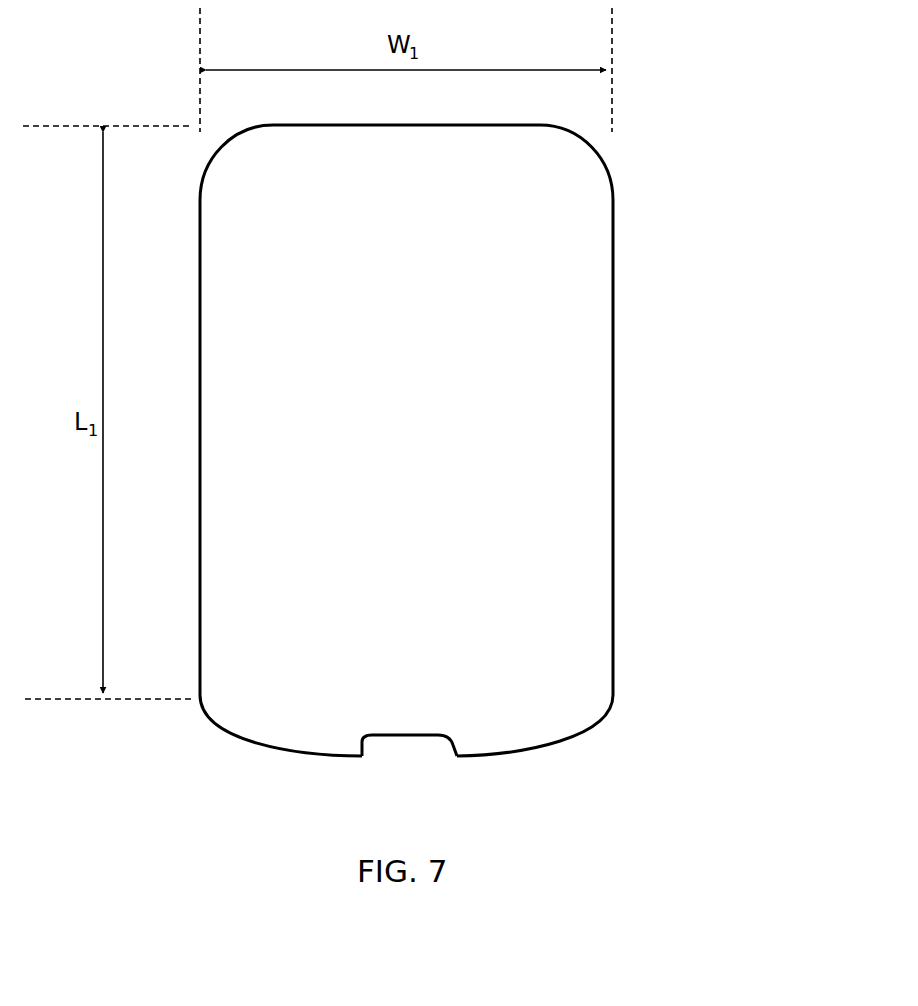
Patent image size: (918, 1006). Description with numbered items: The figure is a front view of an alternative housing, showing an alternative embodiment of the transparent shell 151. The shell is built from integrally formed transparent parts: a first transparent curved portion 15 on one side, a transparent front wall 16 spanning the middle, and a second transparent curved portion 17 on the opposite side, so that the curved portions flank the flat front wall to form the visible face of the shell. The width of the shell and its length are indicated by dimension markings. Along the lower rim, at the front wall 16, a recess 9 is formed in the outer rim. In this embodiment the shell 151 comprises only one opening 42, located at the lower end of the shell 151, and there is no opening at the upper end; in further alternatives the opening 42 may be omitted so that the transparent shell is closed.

The transparent shell 151 is at (488, 490).
The first transparent curved portion 15 is at (248, 366).
The transparent front wall 16 is at (414, 363).
The second transparent curved portion 17 is at (587, 362).
The recess 9 is at (420, 696).
The opening 42 is at (331, 794).